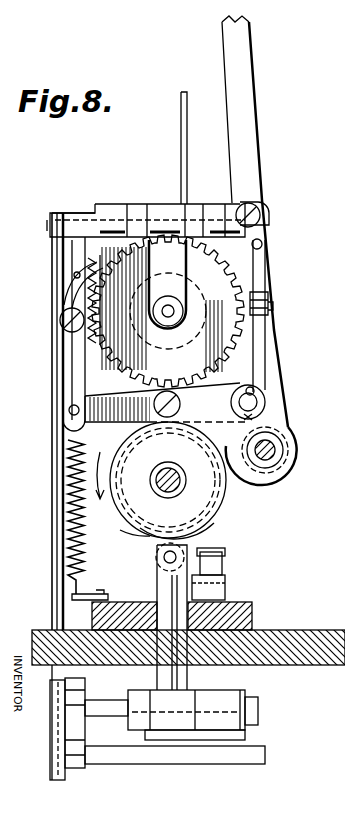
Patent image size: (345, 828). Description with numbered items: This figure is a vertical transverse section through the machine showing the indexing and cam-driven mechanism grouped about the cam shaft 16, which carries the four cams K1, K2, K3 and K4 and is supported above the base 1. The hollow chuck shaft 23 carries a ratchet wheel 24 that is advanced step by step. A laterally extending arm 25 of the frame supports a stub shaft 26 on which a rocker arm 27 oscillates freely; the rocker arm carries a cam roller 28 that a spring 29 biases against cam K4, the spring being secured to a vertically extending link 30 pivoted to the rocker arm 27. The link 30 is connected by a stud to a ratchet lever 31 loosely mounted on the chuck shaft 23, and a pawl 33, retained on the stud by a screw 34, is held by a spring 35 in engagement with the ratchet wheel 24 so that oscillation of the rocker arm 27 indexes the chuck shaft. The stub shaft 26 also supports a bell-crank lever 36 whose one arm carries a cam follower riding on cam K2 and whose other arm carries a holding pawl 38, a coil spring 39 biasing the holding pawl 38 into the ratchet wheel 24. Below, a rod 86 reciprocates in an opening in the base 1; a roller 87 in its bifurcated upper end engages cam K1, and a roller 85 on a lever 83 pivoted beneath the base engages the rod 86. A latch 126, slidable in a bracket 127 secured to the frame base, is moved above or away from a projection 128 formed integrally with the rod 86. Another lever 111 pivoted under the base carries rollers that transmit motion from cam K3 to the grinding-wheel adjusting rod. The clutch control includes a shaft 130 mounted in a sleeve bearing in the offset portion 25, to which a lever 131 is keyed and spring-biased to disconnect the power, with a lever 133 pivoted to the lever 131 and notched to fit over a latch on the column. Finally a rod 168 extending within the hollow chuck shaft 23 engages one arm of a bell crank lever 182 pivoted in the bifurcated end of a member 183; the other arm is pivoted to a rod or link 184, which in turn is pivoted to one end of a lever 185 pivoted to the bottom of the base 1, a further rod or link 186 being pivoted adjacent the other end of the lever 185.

The base 1 is at (300, 642).
The cam shaft 16 is at (170, 478).
The hollow chuck shaft 23 is at (182, 314).
The ratchet wheel 24 is at (122, 262).
The laterally extending arm 25 is at (283, 444).
The stub shaft 26 is at (252, 405).
The rocker arm 27 is at (92, 422).
The cam roller 28 is at (158, 400).
The spring 29 is at (82, 546).
The vertically extending link 30 is at (75, 352).
The ratchet lever 31 is at (72, 305).
The pawl 33 is at (68, 292).
The screw 34 is at (62, 321).
The spring 35 is at (75, 275).
The bell-crank lever 36 is at (262, 350).
The holding pawl 38 is at (262, 313).
The coil spring 39 is at (260, 231).
The lever 83 is at (135, 700).
The roller 85 is at (185, 707).
The rod 86 is at (158, 591).
The roller 87 is at (160, 549).
The lever 111 is at (258, 715).
The latch 126 is at (224, 569).
The projection 128 is at (224, 586).
The bracket 127 is at (240, 603).
The shaft 130 is at (276, 452).
The lever 131 is at (243, 131).
The lever 133 is at (130, 206).
The rod 168 is at (190, 326).
The bell crank lever 182 is at (167, 296).
The member 183 is at (144, 206).
The rod or link 184 is at (56, 432).
The lever 185 is at (80, 726).
The rod or link 186 is at (65, 775).
The cam K1 is at (208, 522).
The cam K2 is at (228, 492).
The cam K3 is at (230, 512).
The cam K4 is at (150, 536).